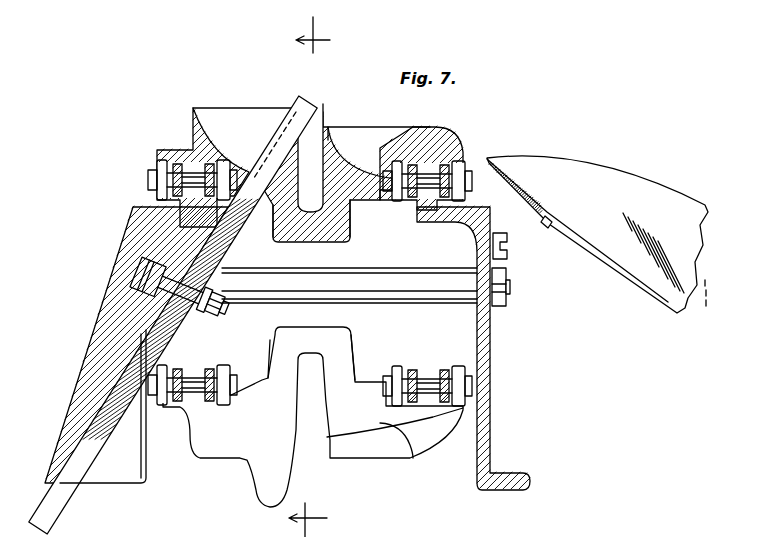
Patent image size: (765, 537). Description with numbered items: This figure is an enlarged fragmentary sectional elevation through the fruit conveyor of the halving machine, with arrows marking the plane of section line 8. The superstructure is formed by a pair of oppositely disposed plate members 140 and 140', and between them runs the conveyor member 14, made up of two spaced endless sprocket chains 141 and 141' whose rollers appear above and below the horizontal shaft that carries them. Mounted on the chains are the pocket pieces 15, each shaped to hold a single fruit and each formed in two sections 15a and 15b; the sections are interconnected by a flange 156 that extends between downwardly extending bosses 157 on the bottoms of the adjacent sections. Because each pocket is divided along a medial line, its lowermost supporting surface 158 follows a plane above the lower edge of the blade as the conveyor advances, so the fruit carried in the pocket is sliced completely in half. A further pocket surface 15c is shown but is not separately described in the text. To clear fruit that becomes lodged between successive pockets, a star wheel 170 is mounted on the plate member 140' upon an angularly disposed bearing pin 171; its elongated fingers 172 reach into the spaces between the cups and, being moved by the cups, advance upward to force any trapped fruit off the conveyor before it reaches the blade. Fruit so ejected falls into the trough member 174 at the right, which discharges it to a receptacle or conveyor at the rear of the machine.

The section line 8- 8 is at (309, 277).
The conveyor member 14 is at (420, 127).
The pocket piece 15 is at (355, 173).
The pocket section 15a is at (362, 128).
The pocket section 15b is at (259, 117).
The cam surface 15c is at (348, 452).
The plate member 140 is at (480, 348).
The plate member 140' is at (136, 344).
The sprocket chain 141 is at (427, 283).
The sprocket chain 141' is at (148, 321).
The flange 156 is at (313, 227).
The downwardly extending boss 157 is at (275, 203).
The lowermost supporting surface 158 is at (325, 118).
The star wheel 170 is at (178, 342).
The bearing pin 171 is at (220, 317).
The elongated finger 172 is at (307, 100).
The trough member 174 is at (597, 180).